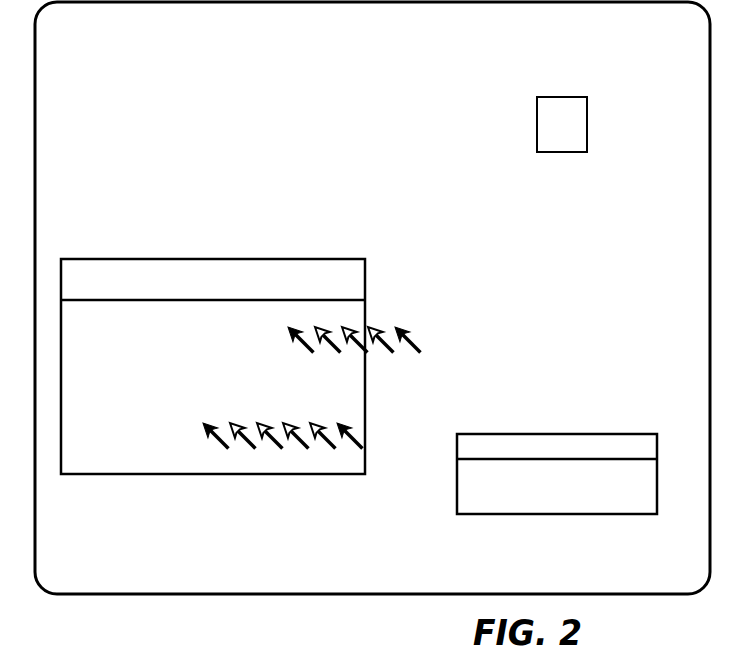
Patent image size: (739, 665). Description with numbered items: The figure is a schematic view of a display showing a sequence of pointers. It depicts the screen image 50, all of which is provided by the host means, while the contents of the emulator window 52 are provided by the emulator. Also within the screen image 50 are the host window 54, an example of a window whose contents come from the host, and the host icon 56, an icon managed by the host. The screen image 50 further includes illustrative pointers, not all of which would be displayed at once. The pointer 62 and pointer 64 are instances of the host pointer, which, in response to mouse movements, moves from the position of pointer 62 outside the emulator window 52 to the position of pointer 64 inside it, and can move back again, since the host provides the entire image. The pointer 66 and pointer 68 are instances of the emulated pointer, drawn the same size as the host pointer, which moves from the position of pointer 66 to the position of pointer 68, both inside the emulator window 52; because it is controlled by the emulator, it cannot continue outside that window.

The screen image 50 is at (139, 596).
The emulator window 52 is at (296, 475).
The host window 54 is at (643, 514).
The host icon 56 is at (575, 98).
The pointer 62 is at (399, 332).
The pointer 64 is at (285, 330).
The pointer 66 is at (187, 436).
The pointer 68 is at (352, 434).